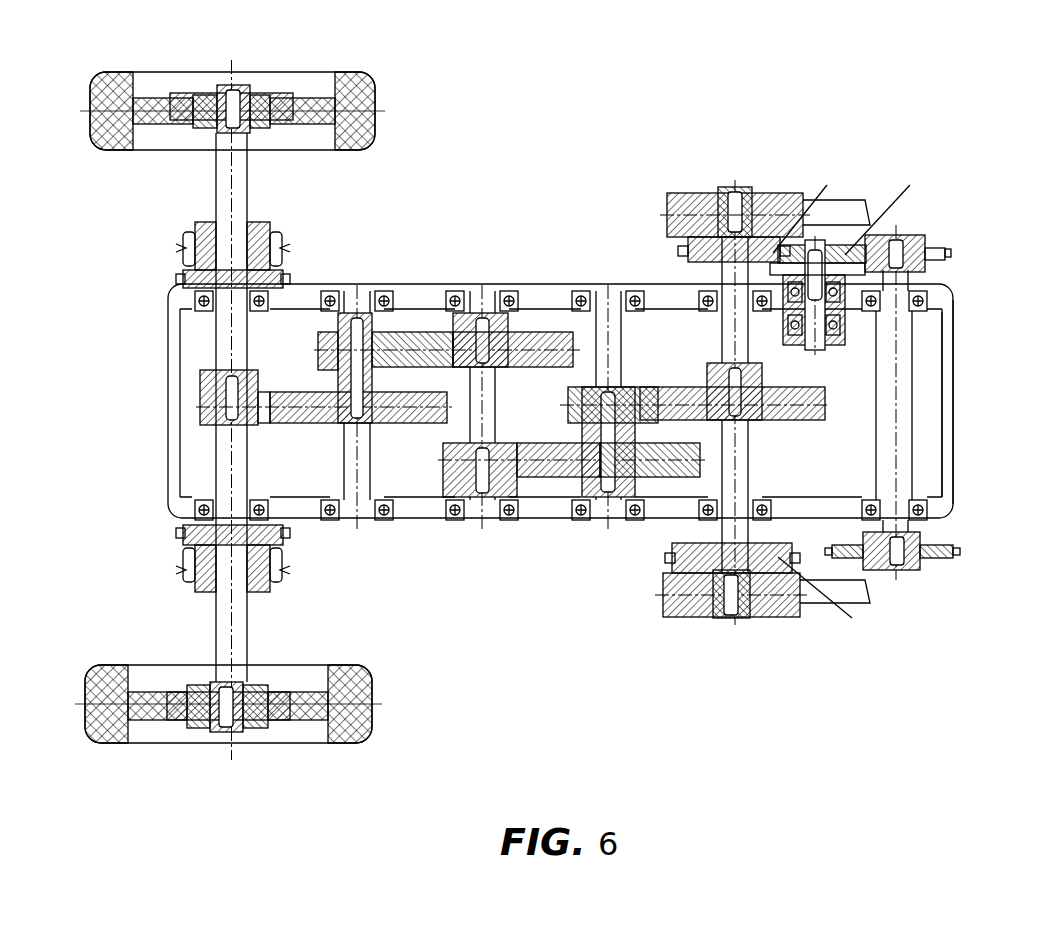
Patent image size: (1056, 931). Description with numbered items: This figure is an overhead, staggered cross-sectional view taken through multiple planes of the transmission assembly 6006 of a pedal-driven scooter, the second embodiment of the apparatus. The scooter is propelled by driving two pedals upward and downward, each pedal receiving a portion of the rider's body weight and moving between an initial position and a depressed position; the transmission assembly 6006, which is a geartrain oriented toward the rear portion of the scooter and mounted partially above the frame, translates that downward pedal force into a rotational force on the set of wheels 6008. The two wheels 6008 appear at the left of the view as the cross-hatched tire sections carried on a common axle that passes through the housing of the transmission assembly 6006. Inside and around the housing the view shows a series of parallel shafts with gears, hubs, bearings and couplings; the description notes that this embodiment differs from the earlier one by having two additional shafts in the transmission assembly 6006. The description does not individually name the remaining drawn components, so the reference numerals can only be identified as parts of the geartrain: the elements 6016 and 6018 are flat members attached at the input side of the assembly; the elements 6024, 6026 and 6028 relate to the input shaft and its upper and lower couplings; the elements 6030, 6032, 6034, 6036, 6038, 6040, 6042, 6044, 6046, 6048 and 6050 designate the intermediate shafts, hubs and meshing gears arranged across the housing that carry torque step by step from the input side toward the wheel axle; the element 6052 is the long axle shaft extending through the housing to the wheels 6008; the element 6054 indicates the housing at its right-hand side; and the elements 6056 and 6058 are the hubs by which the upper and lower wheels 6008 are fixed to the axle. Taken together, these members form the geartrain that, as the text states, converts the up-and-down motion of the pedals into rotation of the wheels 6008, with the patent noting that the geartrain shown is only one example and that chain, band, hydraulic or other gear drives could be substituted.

The transmission assembly 6006 is at (652, 130).
The set of wheels 6008 is at (346, 58).
The first coupling plate 6016 is at (833, 212).
The second coupling plate 6018 is at (855, 592).
The input shaft 6024 is at (740, 253).
The upper coupling 6026 is at (750, 170).
The lower coupling 6028 is at (744, 637).
The input gear 6030 is at (710, 372).
The intermediate gear hub 6032 is at (585, 397).
The intermediate shaft 6034 is at (603, 323).
The coupling hub 6036 is at (732, 620).
The lower transfer gear 6038 is at (512, 478).
The transfer shaft 6040 is at (470, 392).
The upper transfer gear 6042 is at (522, 352).
The pinion gear 6044 is at (385, 330).
The pinion shaft 6046 is at (367, 457).
The output gear 6048 is at (400, 412).
The output gear hub 6050 is at (278, 426).
The axle shaft 6052 is at (223, 632).
The housing 6054 is at (952, 284).
The upper wheel hub 6056 is at (243, 60).
The lower wheel hub 6058 is at (226, 752).